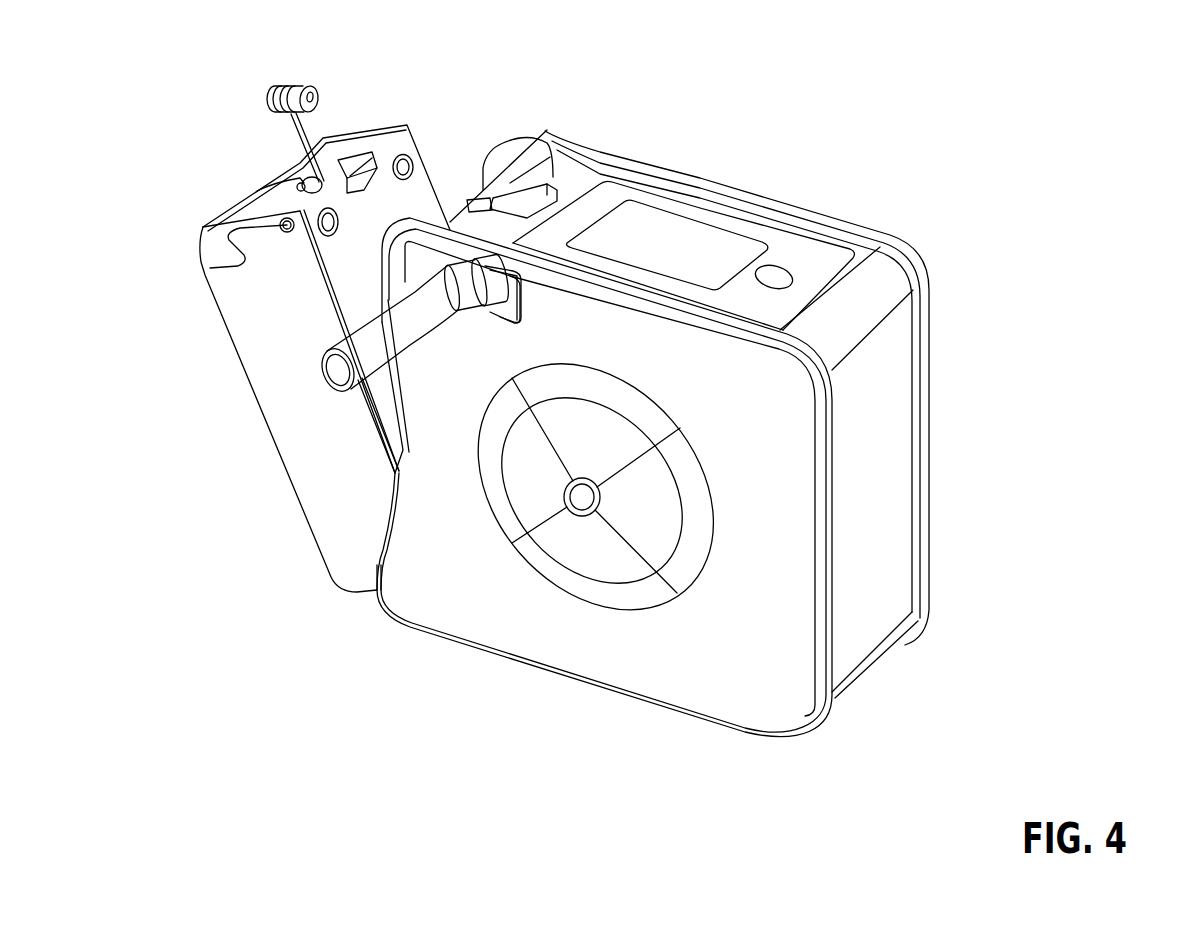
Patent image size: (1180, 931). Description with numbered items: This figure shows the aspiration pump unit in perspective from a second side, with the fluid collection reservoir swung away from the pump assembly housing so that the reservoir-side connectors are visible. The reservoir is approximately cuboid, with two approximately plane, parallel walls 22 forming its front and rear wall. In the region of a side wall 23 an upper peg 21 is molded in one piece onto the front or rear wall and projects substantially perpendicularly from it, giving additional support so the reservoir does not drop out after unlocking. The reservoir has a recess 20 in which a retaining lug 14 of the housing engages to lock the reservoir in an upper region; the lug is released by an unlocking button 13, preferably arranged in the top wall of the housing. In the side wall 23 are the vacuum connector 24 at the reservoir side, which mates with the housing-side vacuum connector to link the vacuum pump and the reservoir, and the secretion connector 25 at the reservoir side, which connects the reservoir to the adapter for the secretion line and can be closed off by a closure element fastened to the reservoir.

The unlocking button 13 is at (547, 187).
The retaining lug 14 is at (482, 190).
The recess 20 is at (370, 158).
The peg 21 is at (210, 268).
The wall 22 is at (293, 313).
The side wall 23 is at (367, 288).
The vacuum connector at the reservoir side 24 is at (414, 168).
The secretion connector at the reservoir side 25 is at (257, 191).